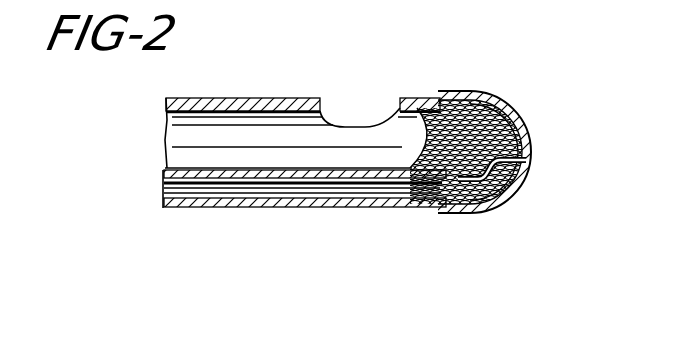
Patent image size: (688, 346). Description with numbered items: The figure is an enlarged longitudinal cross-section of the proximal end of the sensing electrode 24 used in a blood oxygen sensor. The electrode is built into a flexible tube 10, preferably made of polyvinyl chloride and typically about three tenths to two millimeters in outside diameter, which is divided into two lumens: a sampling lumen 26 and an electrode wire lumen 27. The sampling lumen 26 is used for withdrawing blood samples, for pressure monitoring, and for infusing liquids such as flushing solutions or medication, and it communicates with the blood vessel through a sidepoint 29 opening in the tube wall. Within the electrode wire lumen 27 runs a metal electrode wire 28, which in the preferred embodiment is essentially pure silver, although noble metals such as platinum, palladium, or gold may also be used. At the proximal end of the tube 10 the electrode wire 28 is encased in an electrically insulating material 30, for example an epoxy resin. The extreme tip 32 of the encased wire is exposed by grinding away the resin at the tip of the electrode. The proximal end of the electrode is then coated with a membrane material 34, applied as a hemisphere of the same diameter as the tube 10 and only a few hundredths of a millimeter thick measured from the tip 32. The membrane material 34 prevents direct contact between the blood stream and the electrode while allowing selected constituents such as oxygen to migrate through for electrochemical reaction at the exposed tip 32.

The flexible tube 10 is at (265, 97).
The sensing electrode 24 is at (528, 111).
The sampling lumen 26 is at (215, 143).
The electrode wire lumen 27 is at (206, 199).
The electrode wire 28 is at (290, 190).
The sidepoint 29 is at (358, 125).
The electrically insulating material 30 is at (467, 150).
The extreme tip 32 is at (531, 158).
The membrane material 34 is at (522, 187).